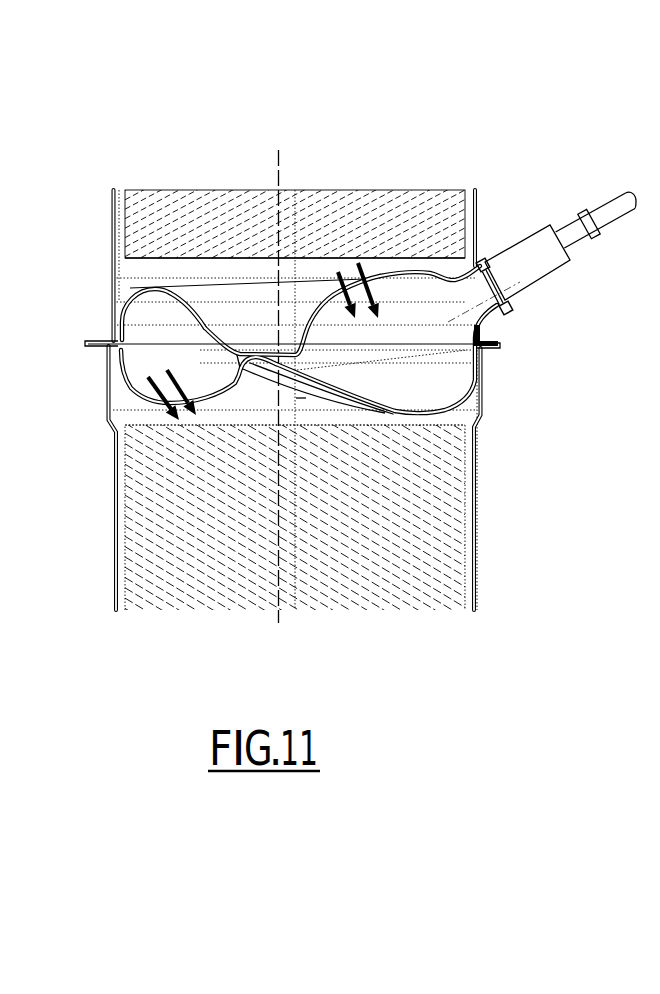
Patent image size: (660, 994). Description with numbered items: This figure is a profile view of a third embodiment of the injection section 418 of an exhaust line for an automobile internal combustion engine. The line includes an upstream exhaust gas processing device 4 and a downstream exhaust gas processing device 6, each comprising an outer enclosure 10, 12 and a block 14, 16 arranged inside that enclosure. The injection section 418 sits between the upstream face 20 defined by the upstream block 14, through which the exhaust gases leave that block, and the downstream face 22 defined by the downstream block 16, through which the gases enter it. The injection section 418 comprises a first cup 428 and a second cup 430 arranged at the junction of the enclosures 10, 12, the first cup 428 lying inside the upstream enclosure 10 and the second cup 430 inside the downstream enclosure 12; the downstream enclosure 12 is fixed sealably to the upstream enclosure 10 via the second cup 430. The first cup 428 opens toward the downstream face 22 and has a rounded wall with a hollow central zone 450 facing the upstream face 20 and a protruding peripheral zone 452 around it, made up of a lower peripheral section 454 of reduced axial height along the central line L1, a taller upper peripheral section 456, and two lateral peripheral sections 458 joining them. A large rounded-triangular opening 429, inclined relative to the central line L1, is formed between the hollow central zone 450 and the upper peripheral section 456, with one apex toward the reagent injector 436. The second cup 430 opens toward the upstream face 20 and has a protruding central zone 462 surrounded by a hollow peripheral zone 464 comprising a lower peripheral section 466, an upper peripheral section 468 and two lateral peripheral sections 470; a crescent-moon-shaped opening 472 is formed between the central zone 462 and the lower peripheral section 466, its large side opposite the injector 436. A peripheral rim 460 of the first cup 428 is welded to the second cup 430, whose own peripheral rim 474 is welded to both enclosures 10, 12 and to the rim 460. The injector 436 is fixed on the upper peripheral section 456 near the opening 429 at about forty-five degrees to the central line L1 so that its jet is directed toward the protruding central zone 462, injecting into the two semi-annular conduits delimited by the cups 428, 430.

The upstream exhaust gas processing device 4 is at (542, 264).
The downstream exhaust gas processing device 6 is at (354, 520).
The upstream outer enclosure 10 is at (472, 224).
The downstream outer enclosure 12 is at (462, 478).
The upstream block 14 is at (452, 212).
The downstream block 16 is at (448, 573).
The upstream face 20 is at (264, 260).
The downstream face 22 is at (351, 425).
The injection section 418 is at (518, 326).
The first cup 428 is at (117, 288).
The opening 429 is at (350, 287).
The second cup 430 is at (107, 380).
The reagent injector 436 is at (552, 222).
The hollow central zone 450 is at (250, 345).
The peripheral zone 452 is at (323, 277).
The lower peripheral section 454 is at (118, 297).
The upper peripheral section 456 is at (402, 273).
The lateral peripheral sections 458 is at (193, 306).
The peripheral rim 460 is at (103, 338).
The central zone 462 is at (240, 380).
The hollow peripheral zone 464 is at (301, 396).
The lower peripheral section 466 is at (157, 407).
The upper peripheral section 468 is at (402, 414).
The lateral peripheral sections 470 is at (259, 374).
The opening 472 is at (133, 410).
The peripheral rim 474 is at (73, 347).
The central line L1 is at (281, 218).